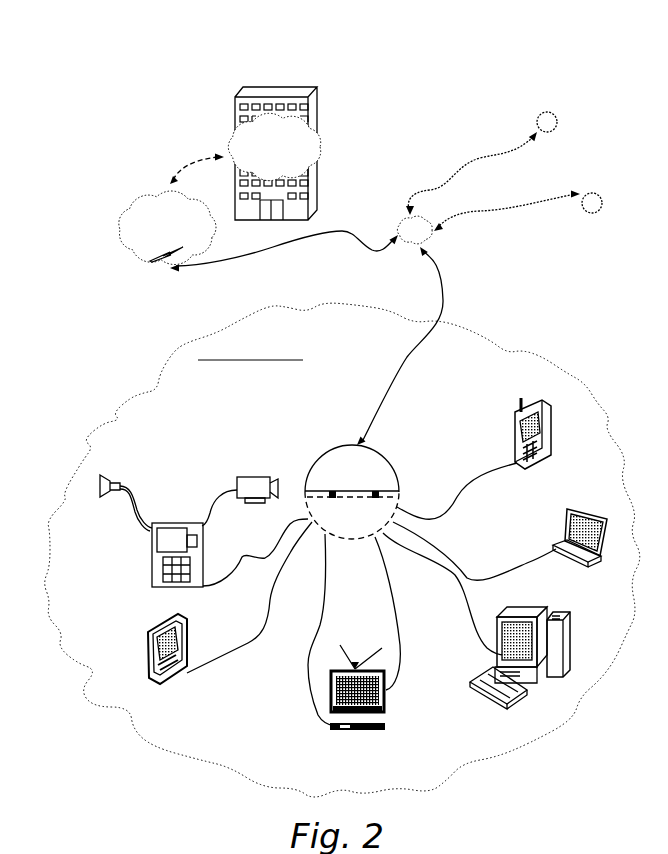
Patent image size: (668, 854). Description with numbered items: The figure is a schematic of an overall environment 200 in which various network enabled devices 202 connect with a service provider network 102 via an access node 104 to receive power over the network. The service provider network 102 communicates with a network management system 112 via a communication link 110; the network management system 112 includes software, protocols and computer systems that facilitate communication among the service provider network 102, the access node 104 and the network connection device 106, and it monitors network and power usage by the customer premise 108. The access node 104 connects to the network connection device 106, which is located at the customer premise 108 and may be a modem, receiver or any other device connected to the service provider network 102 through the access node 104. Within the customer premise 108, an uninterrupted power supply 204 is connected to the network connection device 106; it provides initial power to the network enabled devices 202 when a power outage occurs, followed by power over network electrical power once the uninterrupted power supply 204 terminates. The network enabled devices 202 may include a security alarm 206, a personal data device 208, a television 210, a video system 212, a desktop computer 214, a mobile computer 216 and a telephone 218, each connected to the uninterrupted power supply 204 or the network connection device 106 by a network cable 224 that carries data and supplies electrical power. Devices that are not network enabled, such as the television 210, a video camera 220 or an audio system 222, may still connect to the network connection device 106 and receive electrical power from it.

The overall environment 200 is at (134, 66).
The service provider network 102 is at (150, 197).
The access node 104 is at (410, 243).
The network connection device 106 is at (377, 453).
The customer premise 108 is at (185, 343).
The communication link 110 is at (188, 153).
The network management system 112 is at (318, 133).
The network enabled devices 202 is at (499, 788).
The uninterrupted power supply 204 is at (397, 510).
The security alarm 206 is at (150, 568).
The personal data device 208 is at (150, 627).
The television 210 is at (387, 705).
The video system 212 is at (358, 732).
The desktop computer 214 is at (547, 680).
The mobile computer 216 is at (587, 562).
The telephone 218 is at (543, 470).
The video camera 220 is at (253, 475).
The audio system 222 is at (108, 472).
The network cable 224 is at (308, 647).